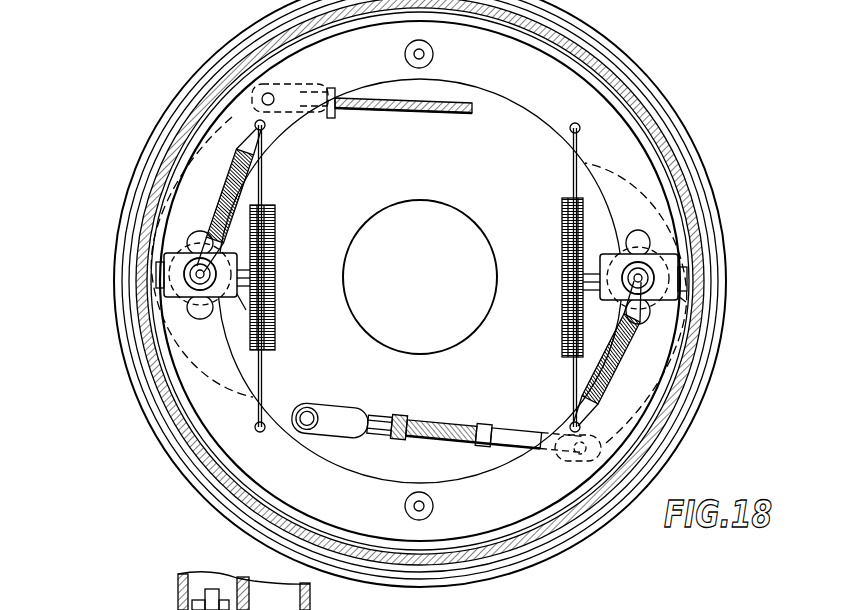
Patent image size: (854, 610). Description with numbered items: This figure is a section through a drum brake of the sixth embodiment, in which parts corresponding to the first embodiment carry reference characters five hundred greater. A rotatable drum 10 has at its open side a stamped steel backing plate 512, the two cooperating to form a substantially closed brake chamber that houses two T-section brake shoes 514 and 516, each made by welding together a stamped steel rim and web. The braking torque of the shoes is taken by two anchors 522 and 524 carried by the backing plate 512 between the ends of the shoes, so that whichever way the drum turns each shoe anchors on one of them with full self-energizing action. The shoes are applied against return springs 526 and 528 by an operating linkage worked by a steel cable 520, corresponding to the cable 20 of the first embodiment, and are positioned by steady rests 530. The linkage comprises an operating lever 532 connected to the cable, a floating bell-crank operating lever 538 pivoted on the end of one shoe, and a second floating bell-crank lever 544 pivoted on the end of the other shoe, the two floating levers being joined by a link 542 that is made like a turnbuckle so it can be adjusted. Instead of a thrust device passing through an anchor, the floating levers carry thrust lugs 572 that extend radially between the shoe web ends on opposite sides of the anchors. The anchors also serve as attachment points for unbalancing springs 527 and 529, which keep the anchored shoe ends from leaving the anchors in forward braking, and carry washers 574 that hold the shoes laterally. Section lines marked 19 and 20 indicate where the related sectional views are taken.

The rotatable drum 10 is at (656, 126).
The section line 19- 19 is at (273, 55).
The steel cable 20 is at (88, 276).
The backing plate 512 is at (486, 197).
The brake shoe 514 is at (557, 73).
The brake shoe 516 is at (512, 500).
The steel cable 520 is at (375, 106).
The anchor 522 is at (188, 262).
The anchor 524 is at (650, 272).
The return spring 526 is at (274, 232).
The unbalancing spring 527 is at (248, 182).
The return spring 528 is at (576, 326).
The unbalancing spring 529 is at (583, 393).
The steady rest 530 is at (432, 62).
The operating lever 532 is at (190, 160).
The floating bell-crank operating lever 538 is at (300, 402).
The link 542 is at (438, 418).
The floating bell-crank lever 544 is at (632, 382).
The thrust lug 572 is at (185, 296).
The washer 574 is at (240, 311).